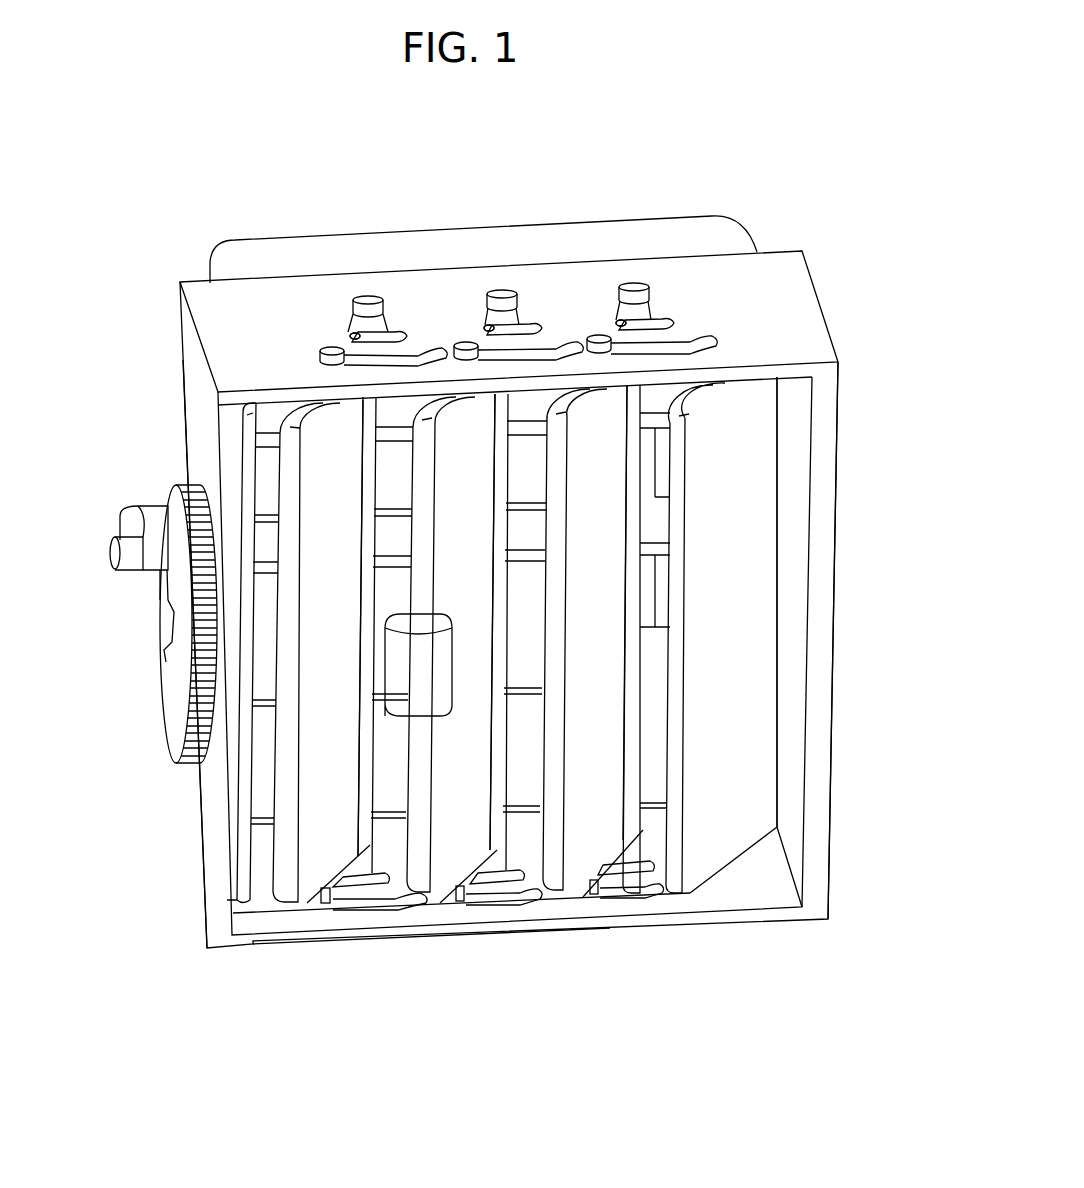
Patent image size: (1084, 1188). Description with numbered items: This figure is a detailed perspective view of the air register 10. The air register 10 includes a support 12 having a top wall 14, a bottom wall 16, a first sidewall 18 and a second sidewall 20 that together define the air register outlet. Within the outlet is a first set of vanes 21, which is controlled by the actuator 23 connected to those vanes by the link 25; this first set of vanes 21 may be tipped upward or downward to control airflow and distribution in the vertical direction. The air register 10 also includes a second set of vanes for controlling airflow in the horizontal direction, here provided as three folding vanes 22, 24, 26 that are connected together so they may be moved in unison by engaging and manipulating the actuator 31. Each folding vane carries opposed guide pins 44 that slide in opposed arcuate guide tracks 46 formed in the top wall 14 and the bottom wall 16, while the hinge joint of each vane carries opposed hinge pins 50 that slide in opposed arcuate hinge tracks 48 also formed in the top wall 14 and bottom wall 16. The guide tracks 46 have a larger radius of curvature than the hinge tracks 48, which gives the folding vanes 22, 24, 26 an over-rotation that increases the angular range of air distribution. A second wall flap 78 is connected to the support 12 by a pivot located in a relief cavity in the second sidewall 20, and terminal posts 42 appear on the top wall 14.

The air register 10 is at (770, 160).
The support 12 is at (820, 297).
The top wall 14 is at (240, 303).
The bottom wall 16 is at (372, 942).
The first sidewall 18 is at (190, 843).
The second sidewall 20 is at (827, 771).
The first set of vanes 21 is at (667, 398).
The folding vane 22 is at (307, 905).
The actuator 23 is at (175, 717).
The folding vane 24 is at (448, 860).
The link 25 is at (128, 523).
The folding vane 26 is at (603, 875).
The actuator 31 is at (410, 665).
The terminal post 42 is at (367, 296).
The opposed guide pins 44 is at (332, 347).
The opposed arcuate guide tracks 46 is at (418, 356).
The opposed arcuate hinge tracks 48 is at (390, 336).
The opposed hinge pins 50 is at (352, 335).
The second wall flap 78 is at (722, 680).